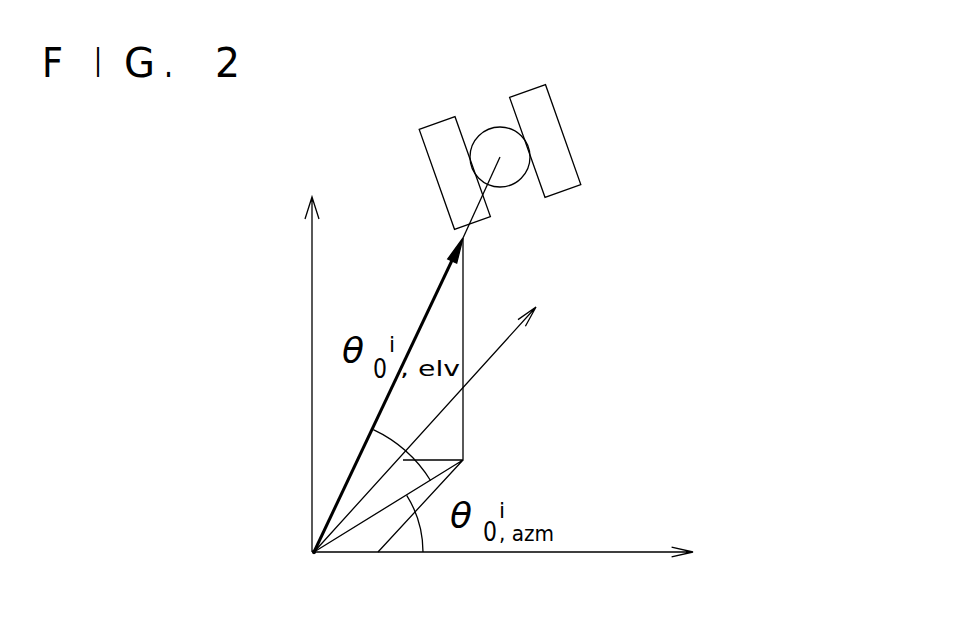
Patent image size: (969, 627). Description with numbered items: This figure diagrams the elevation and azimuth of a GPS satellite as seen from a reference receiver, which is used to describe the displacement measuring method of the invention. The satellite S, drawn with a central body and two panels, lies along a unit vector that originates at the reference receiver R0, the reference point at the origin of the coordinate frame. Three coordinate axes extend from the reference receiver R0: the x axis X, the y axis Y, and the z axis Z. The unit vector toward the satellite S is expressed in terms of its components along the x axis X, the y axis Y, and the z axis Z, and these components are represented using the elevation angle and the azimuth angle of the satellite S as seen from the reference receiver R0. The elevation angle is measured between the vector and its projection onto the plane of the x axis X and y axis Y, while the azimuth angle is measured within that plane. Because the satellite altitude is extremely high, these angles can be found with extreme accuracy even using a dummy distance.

The satellite S is at (602, 157).
The reference receiver R0 is at (394, 583).
The x axis X is at (438, 416).
The y axis Y is at (520, 552).
The z axis Z is at (311, 356).